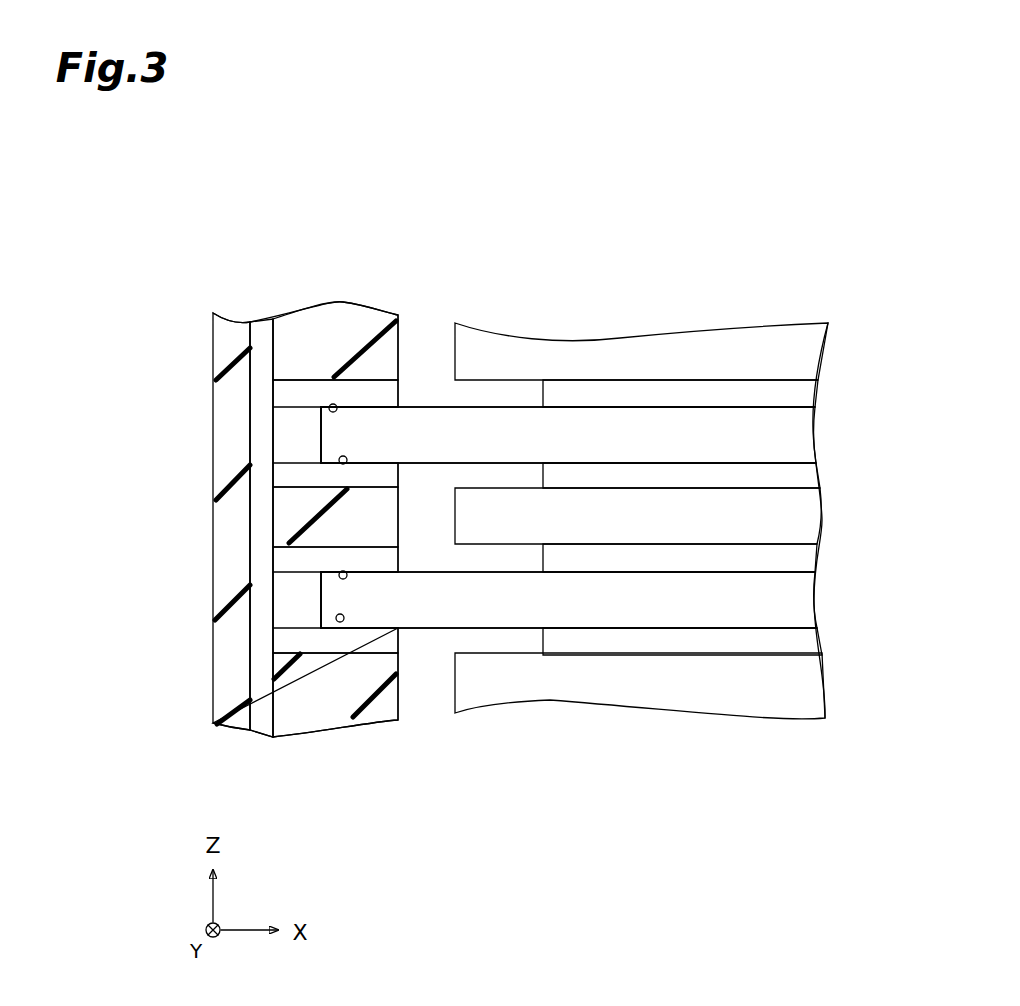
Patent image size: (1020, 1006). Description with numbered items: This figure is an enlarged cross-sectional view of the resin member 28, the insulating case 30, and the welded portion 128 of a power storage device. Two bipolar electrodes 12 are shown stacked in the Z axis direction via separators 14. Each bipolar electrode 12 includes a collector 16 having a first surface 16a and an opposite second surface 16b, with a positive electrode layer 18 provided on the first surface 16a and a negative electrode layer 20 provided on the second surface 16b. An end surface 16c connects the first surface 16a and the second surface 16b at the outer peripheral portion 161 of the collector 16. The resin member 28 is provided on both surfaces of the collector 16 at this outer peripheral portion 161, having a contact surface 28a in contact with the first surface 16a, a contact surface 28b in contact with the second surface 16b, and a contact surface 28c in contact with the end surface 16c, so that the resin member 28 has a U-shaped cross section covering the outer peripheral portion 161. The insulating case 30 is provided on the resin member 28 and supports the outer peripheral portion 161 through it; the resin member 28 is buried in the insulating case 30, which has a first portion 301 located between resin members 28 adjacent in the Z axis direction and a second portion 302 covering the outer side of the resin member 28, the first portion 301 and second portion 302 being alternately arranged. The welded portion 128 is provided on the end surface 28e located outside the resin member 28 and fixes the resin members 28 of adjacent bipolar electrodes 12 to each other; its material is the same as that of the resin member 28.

The bipolar electrode 12 is at (826, 420).
The separator 14 is at (805, 345).
The collector 16 is at (805, 445).
The first surface 16a is at (425, 465).
The second surface 16b is at (426, 405).
The end surface 16c is at (398, 340).
The outer peripheral portion 161 is at (345, 456).
The positive electrode layer 18 is at (800, 393).
The negative electrode layer 20 is at (805, 475).
The resin member 28 is at (250, 385).
The contact surface 28a is at (305, 480).
The contact surface 28b is at (327, 400).
The contact surface 28c is at (298, 418).
The end surface 28e is at (292, 450).
The insulating case 30 is at (230, 350).
The welded portion 128 is at (262, 330).
The first portion 301 is at (370, 512).
The second portion 302 is at (230, 418).